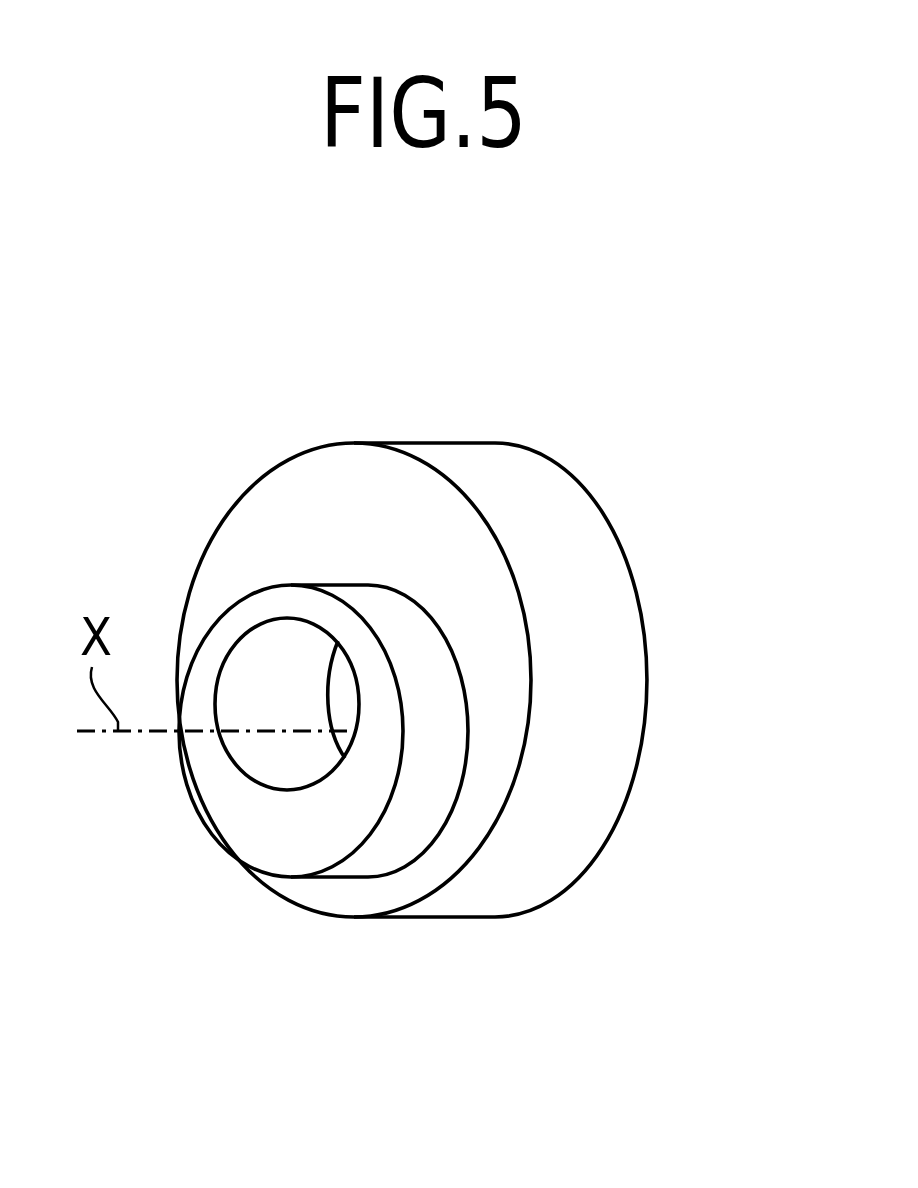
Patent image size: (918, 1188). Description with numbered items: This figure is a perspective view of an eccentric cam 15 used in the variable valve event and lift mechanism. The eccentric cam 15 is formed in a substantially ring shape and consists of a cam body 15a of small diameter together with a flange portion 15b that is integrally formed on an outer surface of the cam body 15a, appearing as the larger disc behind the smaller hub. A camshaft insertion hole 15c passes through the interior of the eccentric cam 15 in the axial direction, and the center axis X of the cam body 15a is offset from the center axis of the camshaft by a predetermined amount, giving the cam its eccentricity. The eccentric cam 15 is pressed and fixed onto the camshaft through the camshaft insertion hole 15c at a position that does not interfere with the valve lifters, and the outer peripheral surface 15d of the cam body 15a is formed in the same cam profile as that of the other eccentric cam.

The eccentric cam 15 is at (430, 678).
The cam body 15a is at (271, 830).
The flange portion 15b is at (615, 661).
The camshaft insertion hole 15c is at (270, 762).
The outer peripheral surface 15d is at (427, 789).